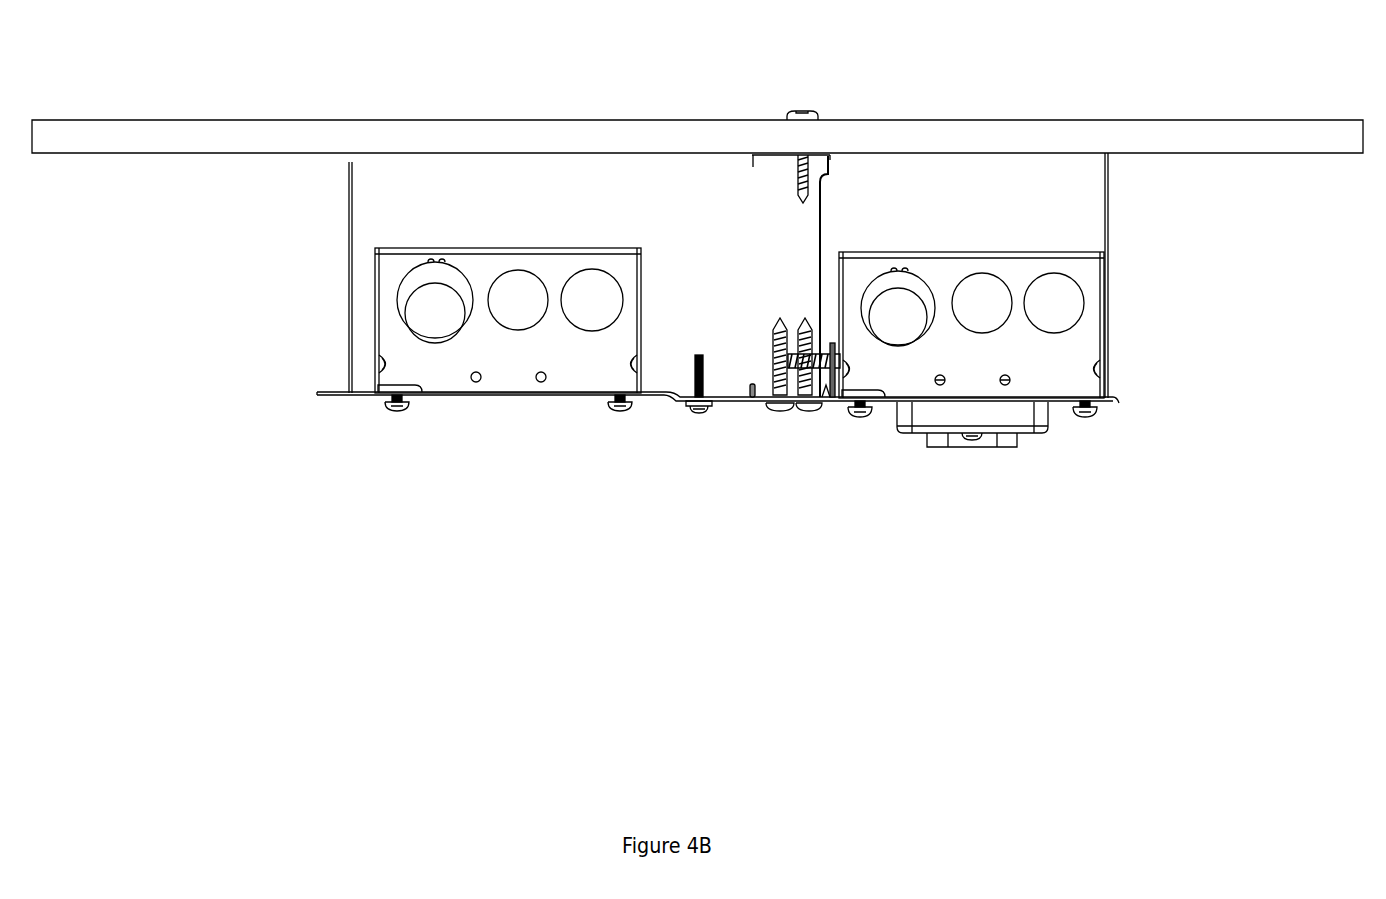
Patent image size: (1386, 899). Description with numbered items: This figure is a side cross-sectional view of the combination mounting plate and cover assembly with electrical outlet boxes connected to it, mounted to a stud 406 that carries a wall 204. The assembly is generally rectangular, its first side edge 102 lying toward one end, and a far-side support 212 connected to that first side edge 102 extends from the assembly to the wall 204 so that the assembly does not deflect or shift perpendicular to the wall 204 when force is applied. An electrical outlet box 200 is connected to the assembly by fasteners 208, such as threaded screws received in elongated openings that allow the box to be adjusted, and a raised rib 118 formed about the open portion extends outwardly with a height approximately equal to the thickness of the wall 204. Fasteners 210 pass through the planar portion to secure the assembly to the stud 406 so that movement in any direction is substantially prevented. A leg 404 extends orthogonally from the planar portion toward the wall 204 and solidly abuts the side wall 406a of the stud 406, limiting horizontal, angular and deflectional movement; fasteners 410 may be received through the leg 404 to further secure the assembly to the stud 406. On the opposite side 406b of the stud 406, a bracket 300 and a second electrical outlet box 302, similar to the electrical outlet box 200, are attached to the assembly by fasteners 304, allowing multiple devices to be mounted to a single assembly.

The wall 204 is at (577, 138).
The stud 406 is at (822, 223).
The fasteners 410 is at (795, 347).
The fasteners 210 is at (775, 330).
The opposite side of stud 406b is at (753, 390).
The far-side support 212 is at (1108, 220).
The electrical outlet box 302 is at (517, 353).
The bracket 300 is at (363, 395).
The fasteners 304 is at (697, 412).
The side wall of stud 406a is at (830, 397).
The leg 404 is at (832, 400).
The electrical outlet box 200 is at (971, 402).
The raised rib 118 is at (1010, 413).
The fasteners 208 is at (1085, 415).
The first side edge 102 is at (1115, 400).